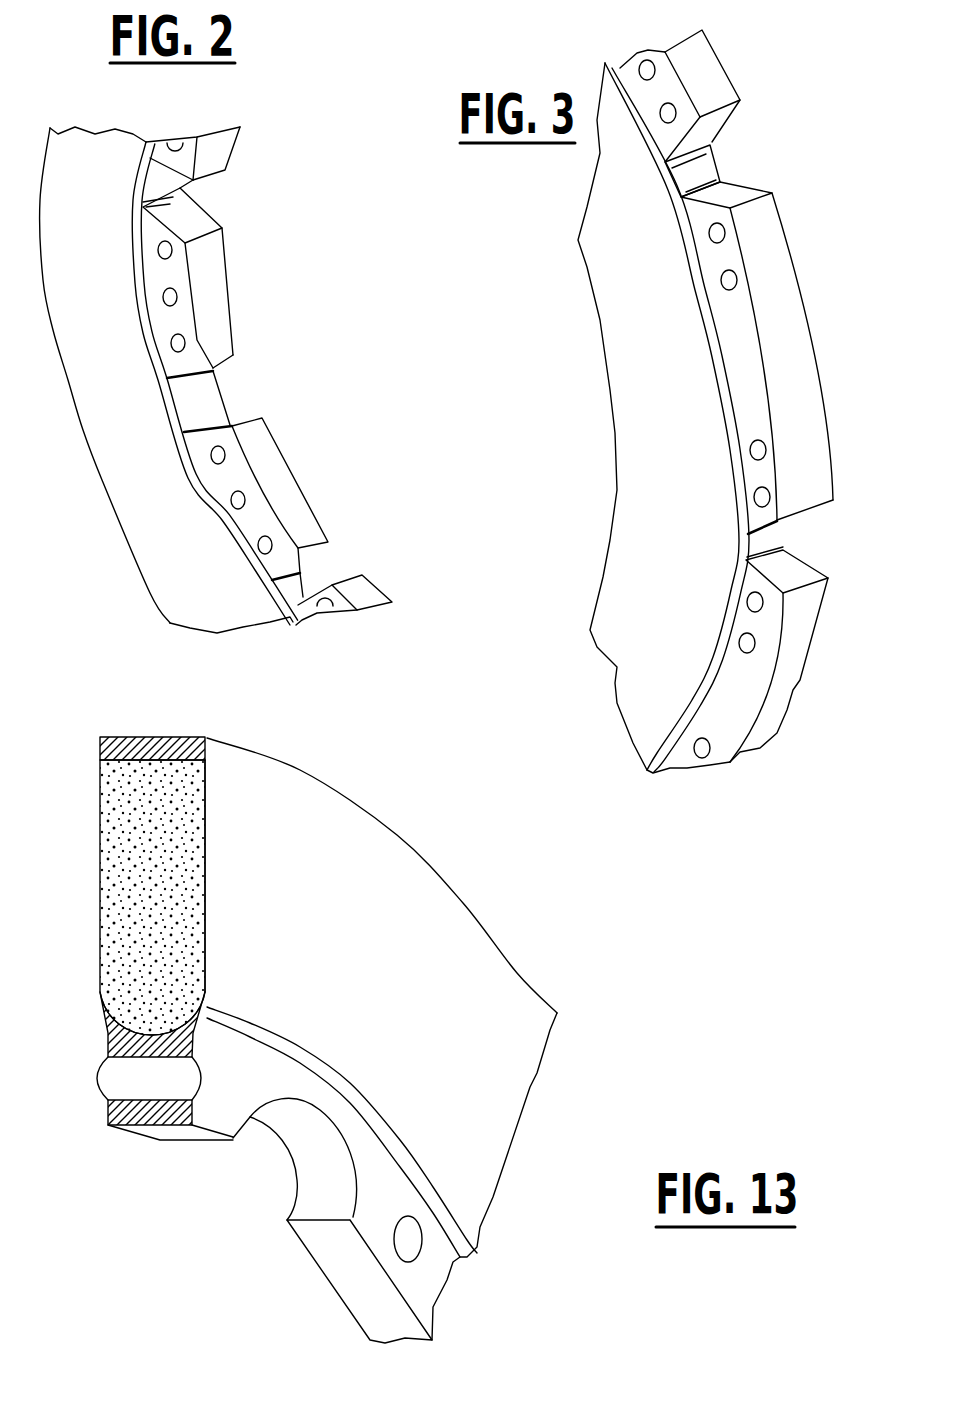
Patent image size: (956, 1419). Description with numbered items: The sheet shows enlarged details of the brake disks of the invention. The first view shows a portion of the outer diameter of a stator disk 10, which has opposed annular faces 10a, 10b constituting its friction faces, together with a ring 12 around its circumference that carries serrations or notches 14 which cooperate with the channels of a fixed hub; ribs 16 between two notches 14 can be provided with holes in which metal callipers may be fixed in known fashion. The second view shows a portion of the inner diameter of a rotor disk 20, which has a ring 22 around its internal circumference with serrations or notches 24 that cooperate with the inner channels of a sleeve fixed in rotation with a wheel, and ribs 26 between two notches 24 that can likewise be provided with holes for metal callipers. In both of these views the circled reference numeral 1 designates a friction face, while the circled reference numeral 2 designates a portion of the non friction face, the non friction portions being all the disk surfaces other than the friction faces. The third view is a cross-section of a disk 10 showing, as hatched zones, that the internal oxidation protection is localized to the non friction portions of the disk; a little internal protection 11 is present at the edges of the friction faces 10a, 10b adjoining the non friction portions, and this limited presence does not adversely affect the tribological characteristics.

In FIG. 2, the friction face 1 is at (92, 422).
In FIG. 3, the friction face 1 is at (632, 520).
In FIG. 2, the portion of the non friction face 2 is at (195, 223).
In FIG. 3, the portion of the non friction face 2 is at (713, 123).
In FIG. 2, the stator disk 10 is at (157, 535).
In FIG. 13, the stator disk 10 is at (162, 1203).
In FIG. 13, the annular face 10a is at (100, 853).
In FIG. 13, the annular face 10b is at (207, 883).
In FIG. 13, the internal protection 11 is at (100, 740).
In FIG. 2, the ring 12 is at (308, 528).
In FIG. 2, the notches 14 is at (222, 398).
In FIG. 2, the ribs 16 is at (176, 318).
In FIG. 3, the rotor disk 20 is at (638, 437).
In FIG. 3, the ring 22 is at (778, 680).
In FIG. 3, the notches 24 is at (722, 161).
In FIG. 3, the ribs 26 is at (718, 98).